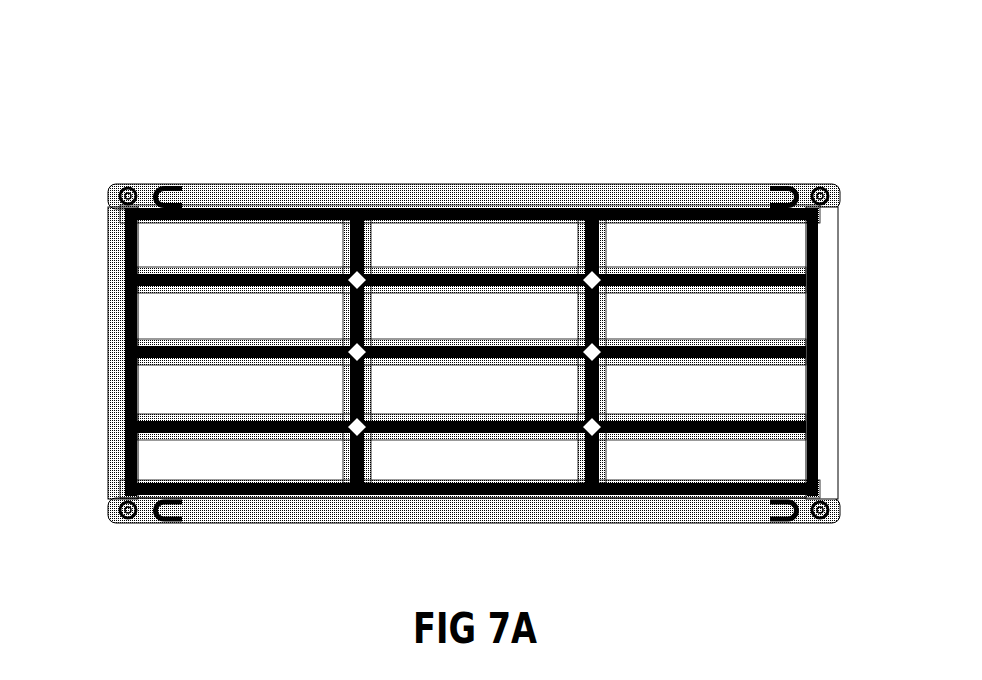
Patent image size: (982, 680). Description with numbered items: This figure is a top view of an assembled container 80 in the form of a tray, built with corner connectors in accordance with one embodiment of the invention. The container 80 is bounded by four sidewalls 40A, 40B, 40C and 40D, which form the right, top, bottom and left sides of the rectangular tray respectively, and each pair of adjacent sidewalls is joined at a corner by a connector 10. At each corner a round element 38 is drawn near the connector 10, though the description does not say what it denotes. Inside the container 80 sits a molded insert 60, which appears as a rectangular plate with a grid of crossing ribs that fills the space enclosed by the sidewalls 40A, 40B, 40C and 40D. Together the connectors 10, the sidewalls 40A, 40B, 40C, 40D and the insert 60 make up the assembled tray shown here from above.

The container 80 is at (461, 322).
The molded insert 60 is at (300, 393).
The corner pin 38 is at (122, 191).
The connector 10 is at (150, 197).
The sidewall 40A is at (835, 351).
The sidewall 40B is at (481, 198).
The sidewall 40C is at (607, 508).
The sidewall 40D is at (113, 342).